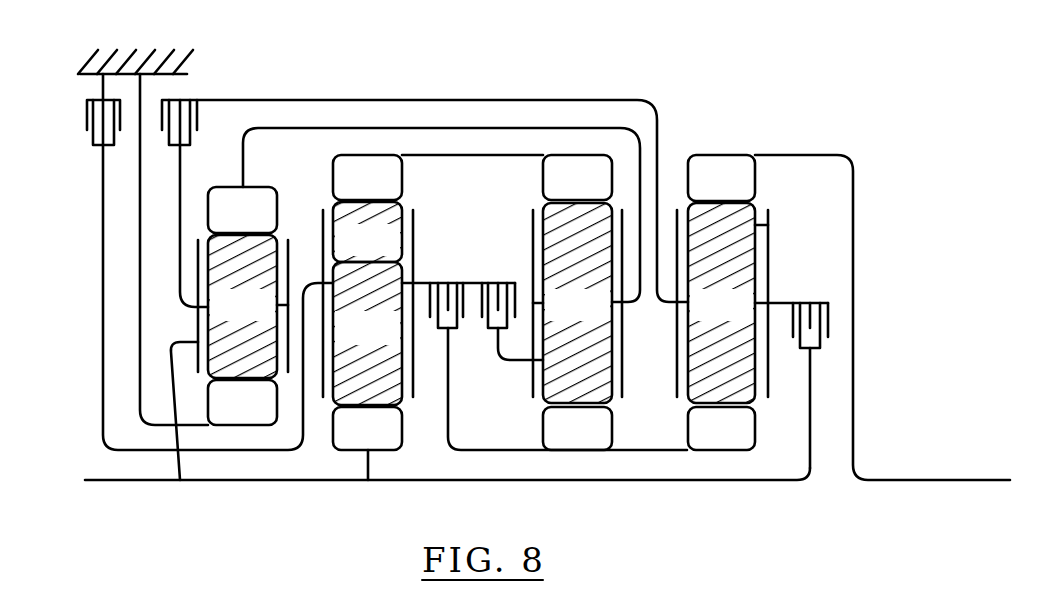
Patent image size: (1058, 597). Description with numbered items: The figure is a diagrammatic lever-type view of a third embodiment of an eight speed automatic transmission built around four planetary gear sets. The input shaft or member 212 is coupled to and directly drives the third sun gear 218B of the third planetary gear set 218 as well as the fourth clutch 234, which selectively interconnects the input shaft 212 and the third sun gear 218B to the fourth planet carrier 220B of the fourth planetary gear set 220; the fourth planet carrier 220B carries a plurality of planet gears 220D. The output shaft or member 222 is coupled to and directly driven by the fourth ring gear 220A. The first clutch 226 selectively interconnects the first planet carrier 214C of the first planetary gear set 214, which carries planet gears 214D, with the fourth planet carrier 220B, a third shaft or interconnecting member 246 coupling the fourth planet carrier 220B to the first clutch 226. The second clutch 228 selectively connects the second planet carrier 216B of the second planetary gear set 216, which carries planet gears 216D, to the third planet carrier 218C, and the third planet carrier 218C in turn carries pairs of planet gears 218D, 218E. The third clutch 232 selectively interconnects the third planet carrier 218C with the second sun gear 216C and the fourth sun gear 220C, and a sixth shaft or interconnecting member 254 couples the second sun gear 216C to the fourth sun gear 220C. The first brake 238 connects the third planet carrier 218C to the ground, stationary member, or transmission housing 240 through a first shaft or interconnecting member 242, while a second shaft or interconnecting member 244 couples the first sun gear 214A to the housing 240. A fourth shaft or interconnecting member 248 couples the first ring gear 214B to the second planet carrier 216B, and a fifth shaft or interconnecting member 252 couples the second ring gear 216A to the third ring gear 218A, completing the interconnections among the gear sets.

The input shaft or member 212 is at (134, 482).
The first planetary gear set 214 is at (169, 357).
The first sun gear 214A is at (216, 416).
The first ring gear 214B is at (216, 223).
The first planet carrier 214C is at (180, 480).
The planet gears 214D is at (216, 318).
The second planetary gear set 216 is at (582, 302).
The second ring gear 216A is at (551, 191).
The second planet carrier 216B is at (623, 337).
The second sun gear 216C is at (551, 442).
The planet gears 216D is at (551, 318).
The third planetary gear set 218 is at (369, 312).
The third ring gear 218A is at (341, 191).
The third sun gear 218B is at (341, 442).
The third planet carrier 218C is at (322, 230).
The planet gears 218D is at (341, 341).
The planet gears 218E is at (341, 253).
The fourth planetary gear set 220 is at (763, 361).
The fourth ring gear 220A is at (695, 191).
The fourth planet carrier 220B is at (770, 225).
The fourth sun gear 220C is at (695, 442).
The planet gears 220D is at (695, 318).
The output shaft or member 222 is at (853, 338).
The first clutch 226 is at (197, 110).
The second clutch 228 is at (488, 330).
The third clutch 232 is at (424, 290).
The fourth clutch 234 is at (795, 302).
The first brake 238 is at (87, 115).
The ground, stationary member, or transmission housing 240 is at (85, 75).
The first shaft or interconnecting member 242 is at (103, 330).
The second shaft or interconnecting member 244 is at (142, 96).
The third shaft or interconnecting member 246 is at (490, 99).
The fourth shaft or interconnecting member 248 is at (547, 126).
The fifth shaft or interconnecting member 252 is at (459, 152).
The sixth shaft or interconnecting member 254 is at (483, 452).